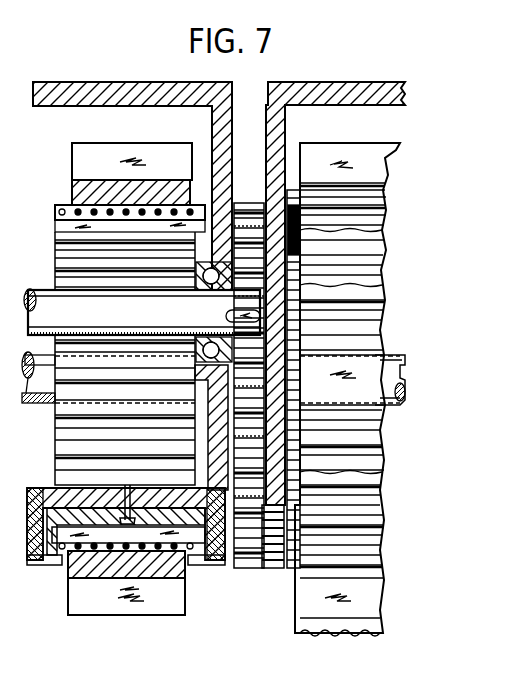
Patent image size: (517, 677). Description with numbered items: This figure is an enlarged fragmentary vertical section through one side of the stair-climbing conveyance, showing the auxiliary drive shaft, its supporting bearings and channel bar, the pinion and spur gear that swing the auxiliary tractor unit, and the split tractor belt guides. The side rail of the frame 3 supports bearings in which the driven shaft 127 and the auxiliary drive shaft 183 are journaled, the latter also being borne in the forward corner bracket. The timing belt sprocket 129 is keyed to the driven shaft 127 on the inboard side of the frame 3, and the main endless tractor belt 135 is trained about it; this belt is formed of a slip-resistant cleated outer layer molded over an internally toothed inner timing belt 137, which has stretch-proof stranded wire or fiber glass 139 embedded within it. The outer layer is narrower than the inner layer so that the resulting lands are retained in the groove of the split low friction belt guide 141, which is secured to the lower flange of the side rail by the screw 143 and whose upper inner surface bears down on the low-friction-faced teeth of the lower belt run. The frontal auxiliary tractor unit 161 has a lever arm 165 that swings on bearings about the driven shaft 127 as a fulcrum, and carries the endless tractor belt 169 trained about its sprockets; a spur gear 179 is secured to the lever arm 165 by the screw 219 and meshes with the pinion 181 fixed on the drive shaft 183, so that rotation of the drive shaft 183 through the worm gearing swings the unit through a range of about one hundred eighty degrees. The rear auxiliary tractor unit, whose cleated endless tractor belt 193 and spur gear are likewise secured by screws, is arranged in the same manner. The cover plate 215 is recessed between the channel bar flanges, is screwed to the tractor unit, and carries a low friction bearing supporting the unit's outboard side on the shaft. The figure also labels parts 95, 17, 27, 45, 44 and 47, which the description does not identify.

The frame 3 is at (52, 88).
The auxiliary tractor unit 161 is at (360, 74).
The lever arm 165 is at (385, 104).
The endless tractor belt 169 is at (393, 143).
The screw 219 is at (384, 230).
The pinion 181 is at (383, 285).
The driven shaft 127 is at (385, 355).
The spur gear 179 is at (244, 570).
The cleated endless tractor belt 193 is at (150, 350).
The cover plate 215 is at (106, 194).
The endless tractor belt 135 is at (72, 162).
The timing belt 137 is at (60, 203).
The timing belt sprocket 129 is at (58, 245).
The spacer stack 95 is at (97, 259).
The drive shaft 183 is at (40, 290).
The bolt 17 is at (116, 327).
The washer 27 is at (22, 397).
The plate stack 45 is at (101, 475).
The pin 44 is at (60, 499).
The bracket 47 is at (44, 487).
The stretch-proof stranded wire 139 is at (112, 552).
The screw 143 is at (38, 567).
The split low friction belt guide 141 is at (56, 570).